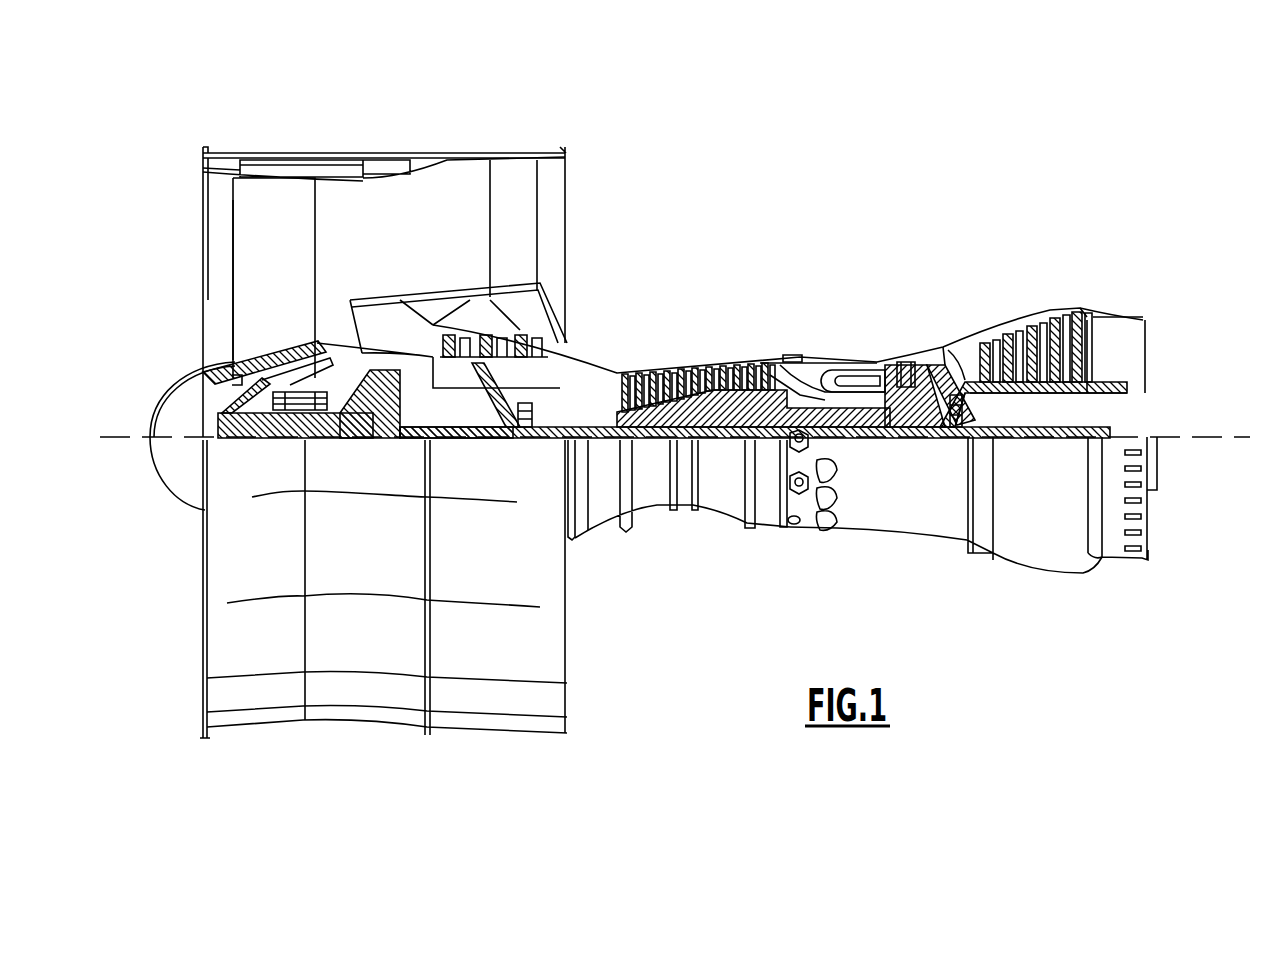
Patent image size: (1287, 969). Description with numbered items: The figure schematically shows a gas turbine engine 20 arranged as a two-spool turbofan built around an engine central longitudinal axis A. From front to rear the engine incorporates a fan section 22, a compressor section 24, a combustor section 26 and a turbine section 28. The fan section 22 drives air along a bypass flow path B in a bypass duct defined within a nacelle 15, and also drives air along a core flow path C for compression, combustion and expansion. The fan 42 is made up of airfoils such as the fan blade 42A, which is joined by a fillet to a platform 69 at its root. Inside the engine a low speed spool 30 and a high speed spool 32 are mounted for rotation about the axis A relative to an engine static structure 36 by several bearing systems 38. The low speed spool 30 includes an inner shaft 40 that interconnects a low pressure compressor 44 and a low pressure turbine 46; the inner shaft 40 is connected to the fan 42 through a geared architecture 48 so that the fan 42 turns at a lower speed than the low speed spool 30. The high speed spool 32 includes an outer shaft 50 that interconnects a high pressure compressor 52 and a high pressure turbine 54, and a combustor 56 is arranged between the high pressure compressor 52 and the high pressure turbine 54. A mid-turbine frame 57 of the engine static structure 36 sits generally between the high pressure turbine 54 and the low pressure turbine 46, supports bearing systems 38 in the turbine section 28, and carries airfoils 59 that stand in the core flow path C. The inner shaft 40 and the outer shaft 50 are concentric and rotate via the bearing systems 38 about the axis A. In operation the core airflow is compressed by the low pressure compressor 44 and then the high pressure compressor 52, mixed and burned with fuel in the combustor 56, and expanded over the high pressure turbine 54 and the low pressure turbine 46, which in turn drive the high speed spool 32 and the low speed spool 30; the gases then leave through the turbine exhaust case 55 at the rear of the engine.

The gas turbine engine 20 is at (847, 207).
The fan section 22 is at (314, 146).
The nacelle 15 is at (388, 160).
The fan 42 is at (288, 282).
The fan blade 42A is at (232, 292).
The platform 69 is at (238, 362).
The low pressure compressor 44 is at (503, 347).
The compressor section 24 is at (620, 340).
The high pressure compressor 52 is at (690, 403).
The combustor section 26 is at (841, 334).
The high speed spool 32 is at (780, 358).
The combustor 56 is at (843, 375).
The high pressure turbine 54 is at (904, 360).
The mid-turbine frame 57 is at (950, 344).
The turbine section 28 is at (990, 296).
The low pressure turbine 46 is at (1037, 314).
The airfoils 59 is at (950, 387).
The outer shaft 50 is at (848, 437).
The bearing systems 38 is at (531, 405).
The geared architecture 48 is at (390, 420).
The inner shaft 40 is at (588, 440).
The low speed spool 30 is at (724, 441).
The engine static structure 36 is at (764, 527).
The turbine exhaust case 55 is at (1128, 564).
The engine central longitudinal axis A is at (1232, 437).
The bypass flow path B is at (350, 228).
The core flow path C is at (386, 337).